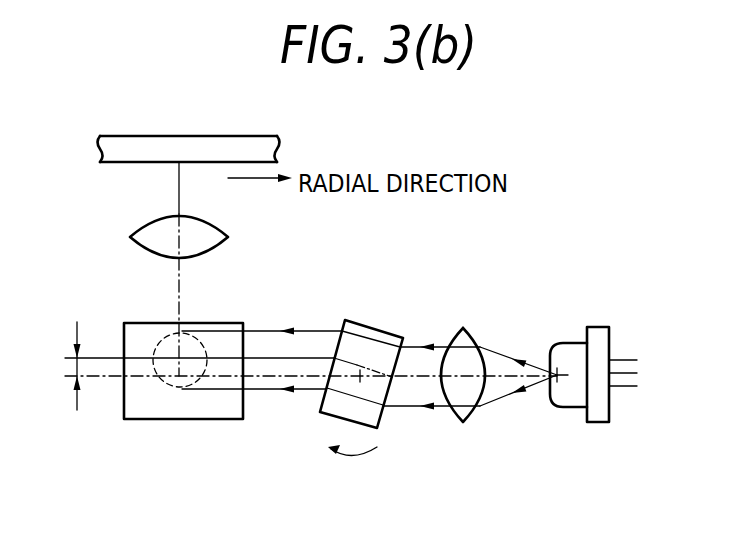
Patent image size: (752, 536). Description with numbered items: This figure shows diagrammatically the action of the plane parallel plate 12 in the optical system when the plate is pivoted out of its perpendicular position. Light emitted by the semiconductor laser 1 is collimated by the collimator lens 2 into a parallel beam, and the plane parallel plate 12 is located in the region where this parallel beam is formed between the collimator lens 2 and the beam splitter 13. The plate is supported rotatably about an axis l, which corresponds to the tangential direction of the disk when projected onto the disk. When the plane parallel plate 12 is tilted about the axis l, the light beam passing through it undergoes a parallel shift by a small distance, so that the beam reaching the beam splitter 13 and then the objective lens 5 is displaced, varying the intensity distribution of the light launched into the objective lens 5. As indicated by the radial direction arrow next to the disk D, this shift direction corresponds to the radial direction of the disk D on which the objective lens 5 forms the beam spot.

The semiconductor laser 1 is at (598, 336).
The collimator lens 2 is at (470, 341).
The objective lens 5 is at (215, 233).
The plane parallel plate 12 is at (373, 330).
The beam splitter 13 is at (159, 406).
The magnetooptical disk D is at (113, 147).
The axis l is at (361, 377).